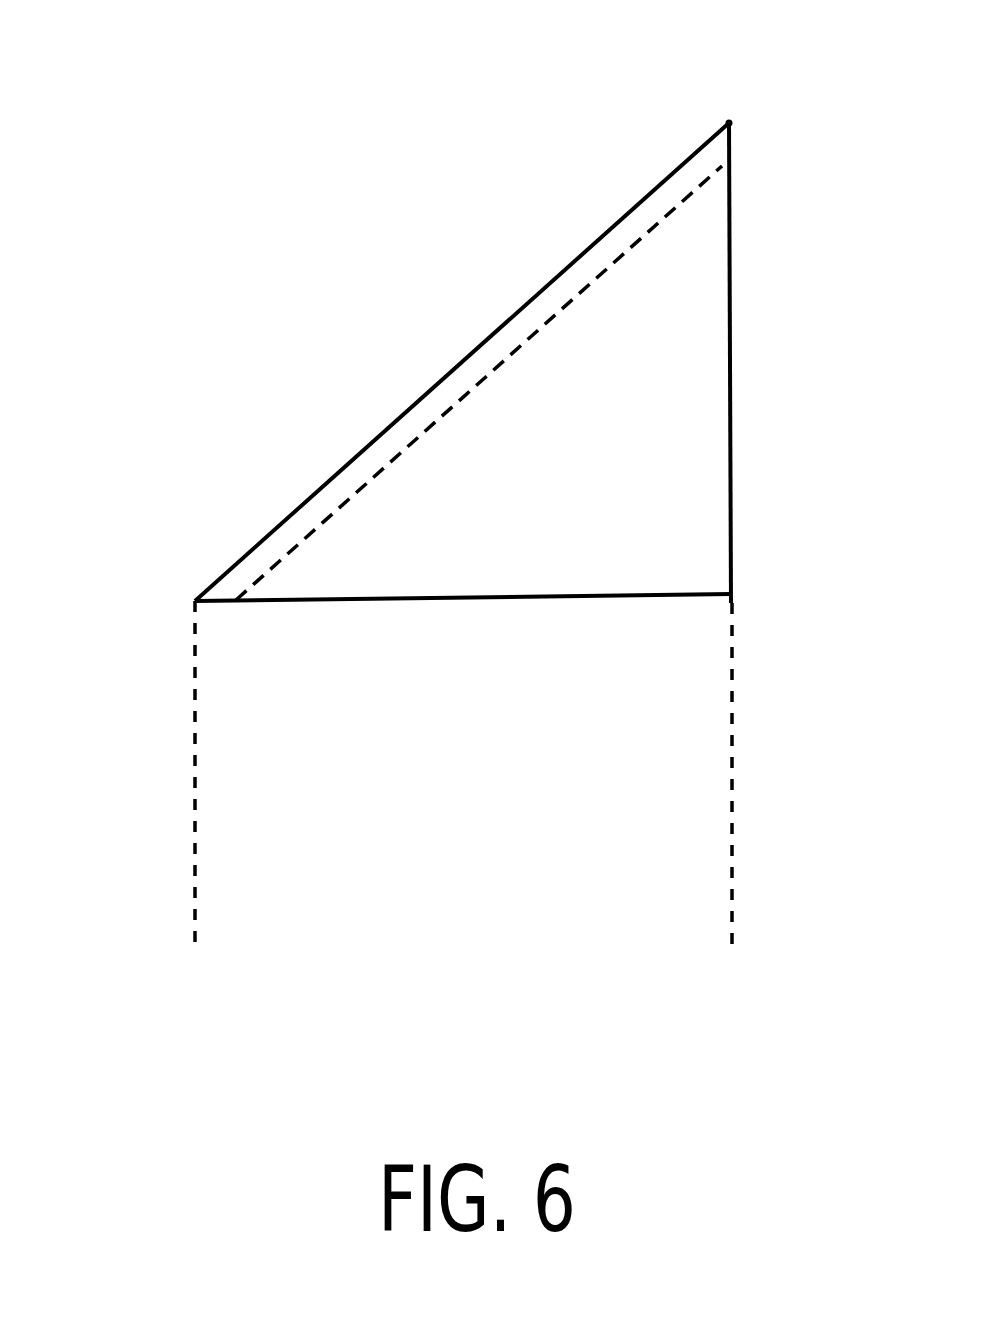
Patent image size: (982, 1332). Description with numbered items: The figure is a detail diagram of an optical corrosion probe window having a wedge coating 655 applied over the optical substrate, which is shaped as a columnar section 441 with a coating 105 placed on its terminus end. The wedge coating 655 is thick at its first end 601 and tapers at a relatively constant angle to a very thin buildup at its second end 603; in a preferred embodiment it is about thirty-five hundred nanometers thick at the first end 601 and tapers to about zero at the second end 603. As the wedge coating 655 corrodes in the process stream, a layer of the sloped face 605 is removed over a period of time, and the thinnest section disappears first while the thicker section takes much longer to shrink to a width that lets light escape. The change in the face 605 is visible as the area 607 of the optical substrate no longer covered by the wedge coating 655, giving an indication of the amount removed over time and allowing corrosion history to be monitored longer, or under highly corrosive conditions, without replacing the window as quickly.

The first end 601 is at (729, 123).
The second end 603 is at (195, 601).
The face 605 is at (372, 443).
The area 607 is at (217, 603).
The wedge coating 655 is at (532, 538).
The coating 105 is at (733, 537).
The columnar section 441 is at (733, 737).